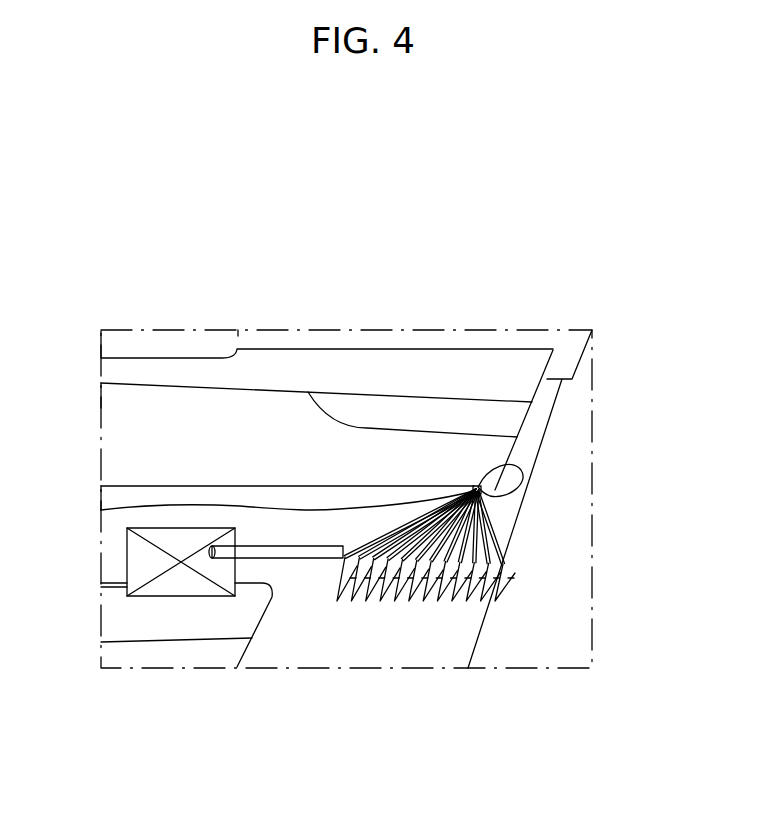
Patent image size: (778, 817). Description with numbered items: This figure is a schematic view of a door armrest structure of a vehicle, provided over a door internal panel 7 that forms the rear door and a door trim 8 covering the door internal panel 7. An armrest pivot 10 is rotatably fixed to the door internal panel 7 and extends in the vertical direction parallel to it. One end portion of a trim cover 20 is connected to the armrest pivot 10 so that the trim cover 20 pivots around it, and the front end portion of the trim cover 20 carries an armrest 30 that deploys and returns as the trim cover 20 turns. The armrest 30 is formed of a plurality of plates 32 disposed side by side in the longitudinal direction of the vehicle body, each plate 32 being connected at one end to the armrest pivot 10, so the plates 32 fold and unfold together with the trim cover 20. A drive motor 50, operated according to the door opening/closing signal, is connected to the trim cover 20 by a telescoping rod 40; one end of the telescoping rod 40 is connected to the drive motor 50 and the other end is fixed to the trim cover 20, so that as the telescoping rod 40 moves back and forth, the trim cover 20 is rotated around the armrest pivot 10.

The door internal panel 7 is at (275, 407).
The door trim 8 is at (537, 426).
The armrest pivot 10 is at (521, 472).
The trim cover 20 is at (500, 587).
The armrest 30 is at (490, 613).
The plate 32 is at (385, 603).
The telescoping rod 40 is at (298, 552).
The drive motor 50 is at (133, 553).